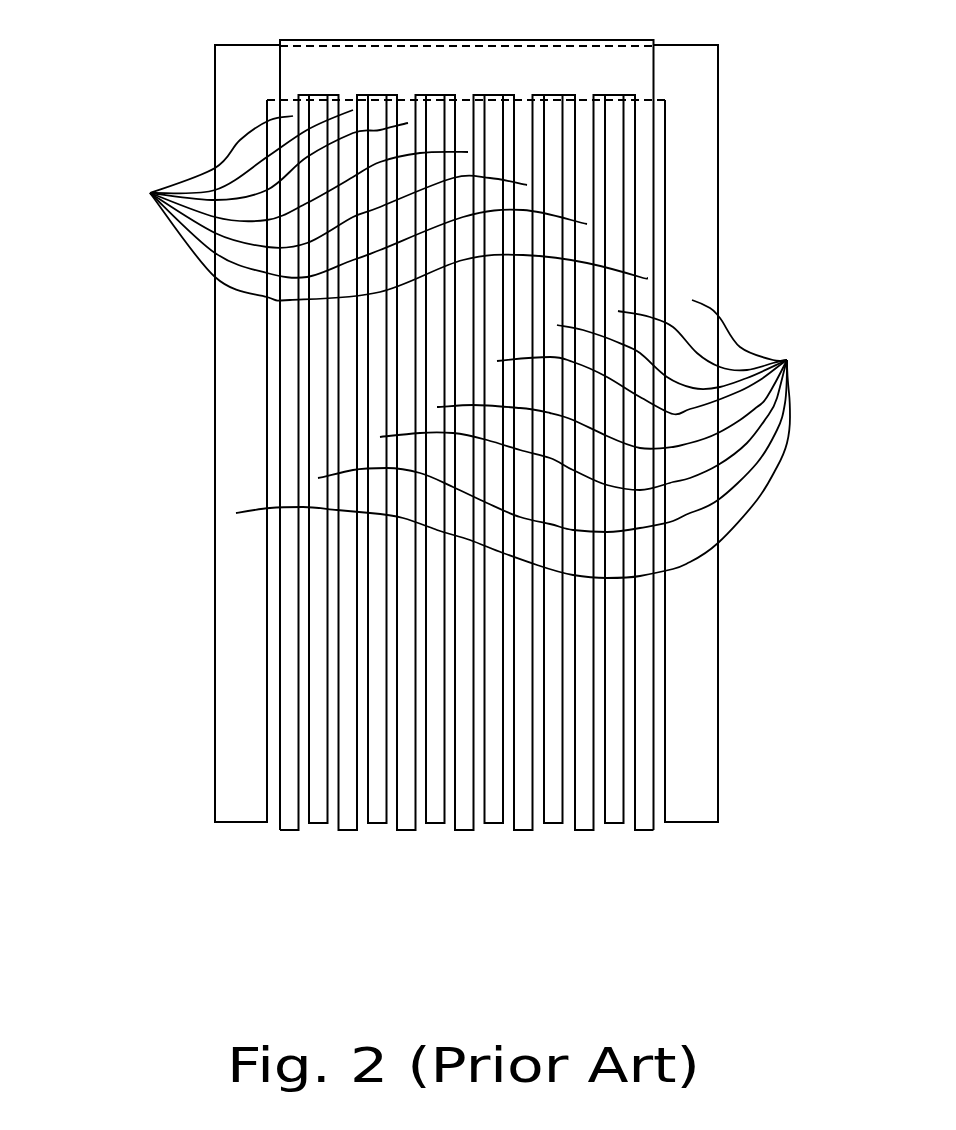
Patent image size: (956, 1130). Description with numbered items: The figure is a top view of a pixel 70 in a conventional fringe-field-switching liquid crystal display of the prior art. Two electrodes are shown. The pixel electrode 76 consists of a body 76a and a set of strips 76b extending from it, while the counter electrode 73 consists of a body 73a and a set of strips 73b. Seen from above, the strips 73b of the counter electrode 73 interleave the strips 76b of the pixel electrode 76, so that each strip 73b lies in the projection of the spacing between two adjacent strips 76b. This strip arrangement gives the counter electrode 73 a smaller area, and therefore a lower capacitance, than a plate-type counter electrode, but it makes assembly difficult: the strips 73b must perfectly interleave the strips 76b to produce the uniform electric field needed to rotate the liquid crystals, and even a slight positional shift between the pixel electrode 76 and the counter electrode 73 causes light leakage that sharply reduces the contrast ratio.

The prior art interdigitated capacitive sensor 70 is at (469, 484).
The counter electrode 73 is at (555, 434).
The body 73a is at (683, 82).
The strips 73b is at (833, 193).
The pixel electrode 76 is at (348, 435).
The body 76a is at (295, 68).
The strips 76b is at (100, 83).